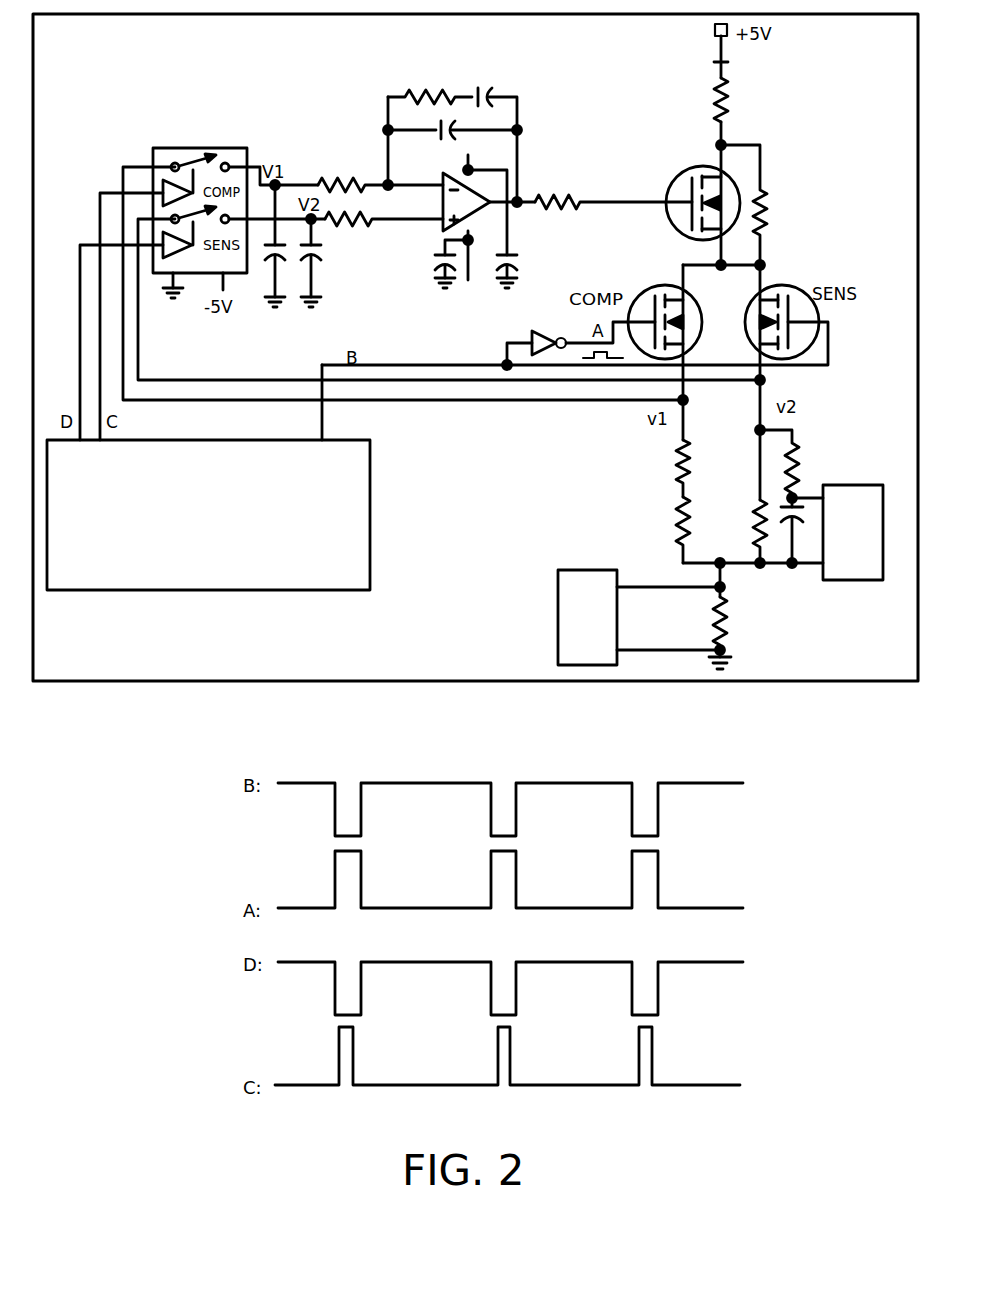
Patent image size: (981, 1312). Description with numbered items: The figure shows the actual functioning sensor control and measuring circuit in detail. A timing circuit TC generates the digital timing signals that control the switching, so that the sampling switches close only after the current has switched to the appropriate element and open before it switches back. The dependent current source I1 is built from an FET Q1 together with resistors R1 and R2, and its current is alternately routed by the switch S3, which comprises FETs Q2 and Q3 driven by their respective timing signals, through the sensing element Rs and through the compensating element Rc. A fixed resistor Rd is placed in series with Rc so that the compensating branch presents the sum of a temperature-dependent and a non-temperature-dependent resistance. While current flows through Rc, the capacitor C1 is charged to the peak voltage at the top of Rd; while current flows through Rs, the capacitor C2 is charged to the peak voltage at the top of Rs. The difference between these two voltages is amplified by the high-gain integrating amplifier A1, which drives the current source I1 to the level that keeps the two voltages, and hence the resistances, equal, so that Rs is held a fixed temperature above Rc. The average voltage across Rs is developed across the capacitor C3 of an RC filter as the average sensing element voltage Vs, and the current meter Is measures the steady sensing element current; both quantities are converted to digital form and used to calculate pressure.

The high-gain integrating amplifier A1 is at (440, 78).
The capacitor C1 is at (275, 246).
The capacitor C2 is at (323, 263).
The capacitor of RC filter C3 is at (798, 535).
The resistor R1 is at (738, 100).
The resistor R2 is at (760, 205).
The fixed resistor Rd is at (668, 468).
The compensating element Rc is at (695, 530).
The sensing element Rs is at (746, 531).
The FET Q1 is at (687, 215).
The FET Q2 is at (782, 382).
The FET Q3 is at (663, 352).
The switch S3 is at (716, 324).
The dependent current source I1 is at (803, 134).
The timing circuit TC is at (208, 592).
The average sensing element voltage Vs is at (853, 532).
The current meter Is is at (587, 617).